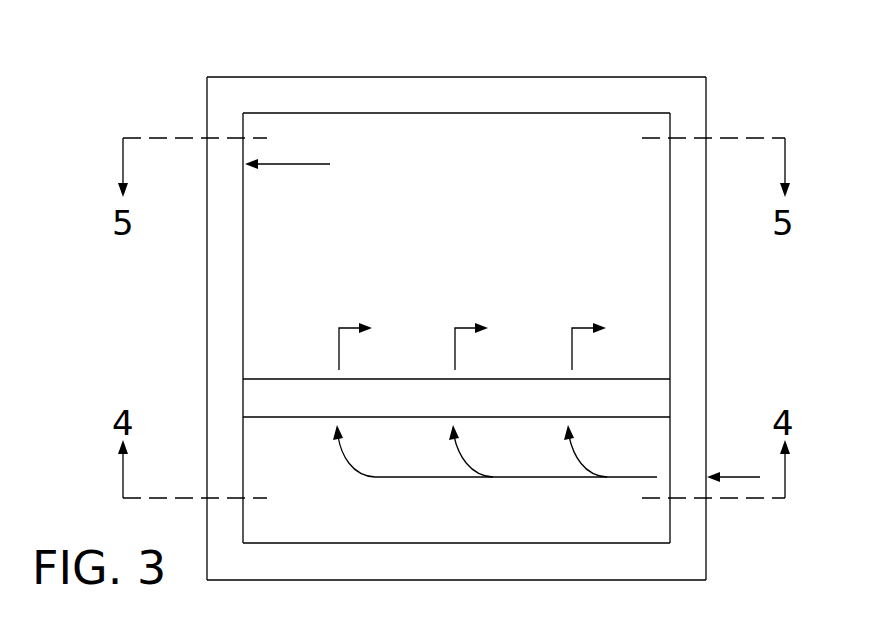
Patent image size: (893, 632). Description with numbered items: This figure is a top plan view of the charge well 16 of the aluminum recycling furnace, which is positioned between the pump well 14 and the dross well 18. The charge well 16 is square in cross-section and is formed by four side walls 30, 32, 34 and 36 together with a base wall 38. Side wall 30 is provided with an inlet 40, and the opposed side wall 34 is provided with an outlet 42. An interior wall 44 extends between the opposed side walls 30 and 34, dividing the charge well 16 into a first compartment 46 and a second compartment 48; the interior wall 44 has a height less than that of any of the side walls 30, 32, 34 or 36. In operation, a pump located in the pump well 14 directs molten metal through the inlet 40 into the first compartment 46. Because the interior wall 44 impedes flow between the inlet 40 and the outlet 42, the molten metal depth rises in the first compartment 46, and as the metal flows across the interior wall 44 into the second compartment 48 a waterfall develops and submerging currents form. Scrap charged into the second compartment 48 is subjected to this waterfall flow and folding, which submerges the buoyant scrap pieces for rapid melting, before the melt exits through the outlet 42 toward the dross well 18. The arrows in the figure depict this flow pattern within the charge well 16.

The pump well 14 is at (791, 556).
The charge well 16 is at (467, 250).
The dross well 18 is at (131, 276).
The side wall 30 is at (693, 340).
The side wall 32 is at (530, 525).
The side wall 34 is at (218, 345).
The side wall 36 is at (440, 85).
The base wall 38 is at (556, 140).
The inlet 40 is at (712, 453).
The outlet 42 is at (202, 172).
The interior wall 44 is at (498, 390).
The first compartment 46 is at (353, 525).
The second compartment 48 is at (355, 130).